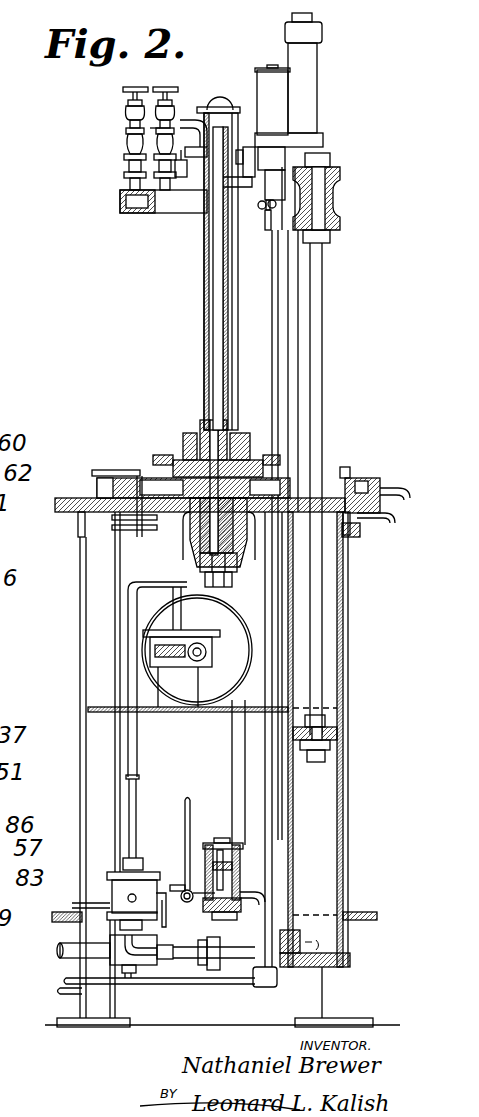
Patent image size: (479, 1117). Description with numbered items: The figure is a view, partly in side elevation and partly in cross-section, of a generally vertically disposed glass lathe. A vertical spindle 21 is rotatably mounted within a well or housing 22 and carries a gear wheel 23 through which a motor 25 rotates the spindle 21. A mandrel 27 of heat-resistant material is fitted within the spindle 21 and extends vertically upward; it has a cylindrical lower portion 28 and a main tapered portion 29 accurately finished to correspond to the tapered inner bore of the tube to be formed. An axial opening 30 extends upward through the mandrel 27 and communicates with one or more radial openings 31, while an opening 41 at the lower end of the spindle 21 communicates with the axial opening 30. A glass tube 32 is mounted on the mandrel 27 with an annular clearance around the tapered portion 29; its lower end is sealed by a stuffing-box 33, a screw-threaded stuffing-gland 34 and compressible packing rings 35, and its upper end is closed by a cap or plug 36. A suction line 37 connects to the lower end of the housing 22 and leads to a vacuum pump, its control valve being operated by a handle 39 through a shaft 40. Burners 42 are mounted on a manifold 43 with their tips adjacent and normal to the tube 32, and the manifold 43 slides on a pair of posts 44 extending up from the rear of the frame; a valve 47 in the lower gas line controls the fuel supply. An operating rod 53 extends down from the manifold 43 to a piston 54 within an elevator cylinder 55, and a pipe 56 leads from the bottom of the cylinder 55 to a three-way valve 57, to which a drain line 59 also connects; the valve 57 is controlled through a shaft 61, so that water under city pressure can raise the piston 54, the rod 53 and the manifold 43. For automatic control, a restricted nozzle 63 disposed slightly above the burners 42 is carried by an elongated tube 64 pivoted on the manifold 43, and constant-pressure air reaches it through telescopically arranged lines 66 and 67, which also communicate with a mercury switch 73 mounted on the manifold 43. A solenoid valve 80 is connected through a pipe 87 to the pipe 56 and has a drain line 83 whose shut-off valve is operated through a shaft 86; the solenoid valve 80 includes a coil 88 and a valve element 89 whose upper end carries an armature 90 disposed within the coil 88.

The vertical spindle 21 is at (182, 527).
The well or housing 22 is at (187, 547).
The gear wheel 23 is at (150, 460).
The motor 25 is at (232, 676).
The mandrel 27 is at (215, 298).
The cylindrical lower portion 28 is at (345, 534).
The main tapered portion 29 is at (210, 258).
The axial opening 30 is at (252, 490).
The radial openings 31 is at (237, 437).
The glass tube 32 is at (202, 342).
The stuffing-box 33 is at (262, 445).
The stuffing-gland 34 is at (190, 433).
The packing rings or gaskets 35 is at (177, 453).
The cap or plug 36 is at (222, 92).
The suction line 37 is at (133, 683).
The handle 39 is at (105, 470).
The shaft 40 is at (133, 796).
The opening 41 is at (235, 554).
The burners 42 is at (173, 128).
The manifold 43 is at (120, 209).
The posts 44 is at (301, 356).
The valve 47 is at (132, 960).
The operating rod 53 is at (318, 280).
The piston 54 is at (330, 752).
The elevator cylinder 55 is at (333, 832).
The pipe 56 is at (243, 960).
The three-way valve 57 is at (120, 902).
The drain line 59 is at (172, 883).
The shaft 61 is at (134, 832).
The restricted nozzle 63 is at (237, 157).
The elongated tube 64 is at (259, 153).
The lower air line 66 is at (183, 980).
The upper air line 67 is at (275, 306).
The mercury switch 73 is at (275, 92).
The solenoid valve 80 is at (236, 866).
The drain line 83 is at (182, 945).
The shaft 86 is at (191, 833).
The pipe 87 is at (300, 893).
The coil 88 is at (236, 853).
The valve element 89 is at (237, 905).
The armature 90 is at (236, 874).